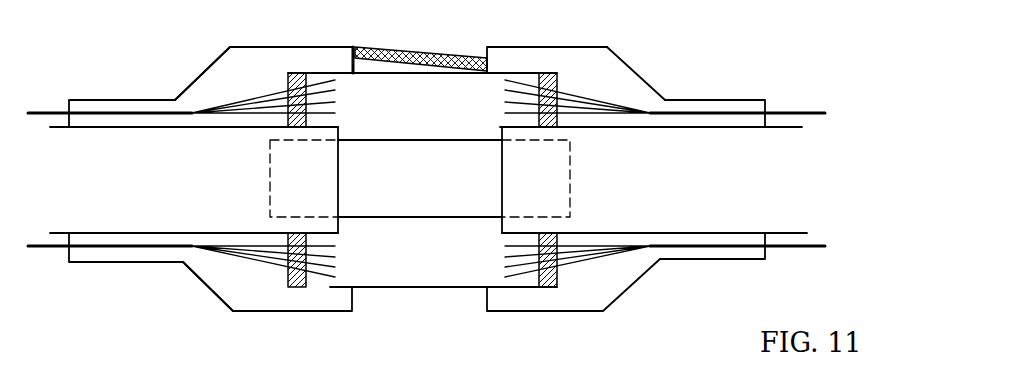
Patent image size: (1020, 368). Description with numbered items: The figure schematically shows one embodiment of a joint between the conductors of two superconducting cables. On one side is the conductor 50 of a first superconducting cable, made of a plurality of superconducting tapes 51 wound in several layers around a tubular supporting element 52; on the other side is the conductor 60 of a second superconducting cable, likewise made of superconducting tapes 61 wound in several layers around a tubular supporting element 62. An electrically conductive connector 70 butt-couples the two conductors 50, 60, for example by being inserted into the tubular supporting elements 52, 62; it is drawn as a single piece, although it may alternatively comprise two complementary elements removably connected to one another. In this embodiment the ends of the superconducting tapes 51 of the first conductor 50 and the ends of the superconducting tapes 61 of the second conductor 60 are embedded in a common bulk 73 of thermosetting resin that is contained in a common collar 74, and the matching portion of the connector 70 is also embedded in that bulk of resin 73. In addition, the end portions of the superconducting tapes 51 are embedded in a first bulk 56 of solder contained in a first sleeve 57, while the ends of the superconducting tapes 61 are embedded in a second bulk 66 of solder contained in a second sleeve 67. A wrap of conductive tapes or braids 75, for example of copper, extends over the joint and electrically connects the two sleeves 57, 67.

The conductor of a first superconducting cable 50 is at (137, 249).
The superconducting tapes 51 is at (252, 264).
The tubular supporting element 52 is at (110, 199).
The first bulk of solder 56 is at (230, 68).
The first sleeve 57 is at (187, 85).
The conductor of a second superconducting cable 60 is at (793, 247).
The superconducting tapes 61 is at (577, 264).
The tubular supporting element 62 is at (712, 211).
The second bulk of solder 66 is at (623, 88).
The second sleeve 67 is at (645, 45).
The electrically conductive connector 70 is at (413, 206).
The common bulk of thermosetting resin 73 is at (445, 95).
The common collar 74 is at (520, 70).
The wrap of conductive tapes or braids 75 is at (436, 57).